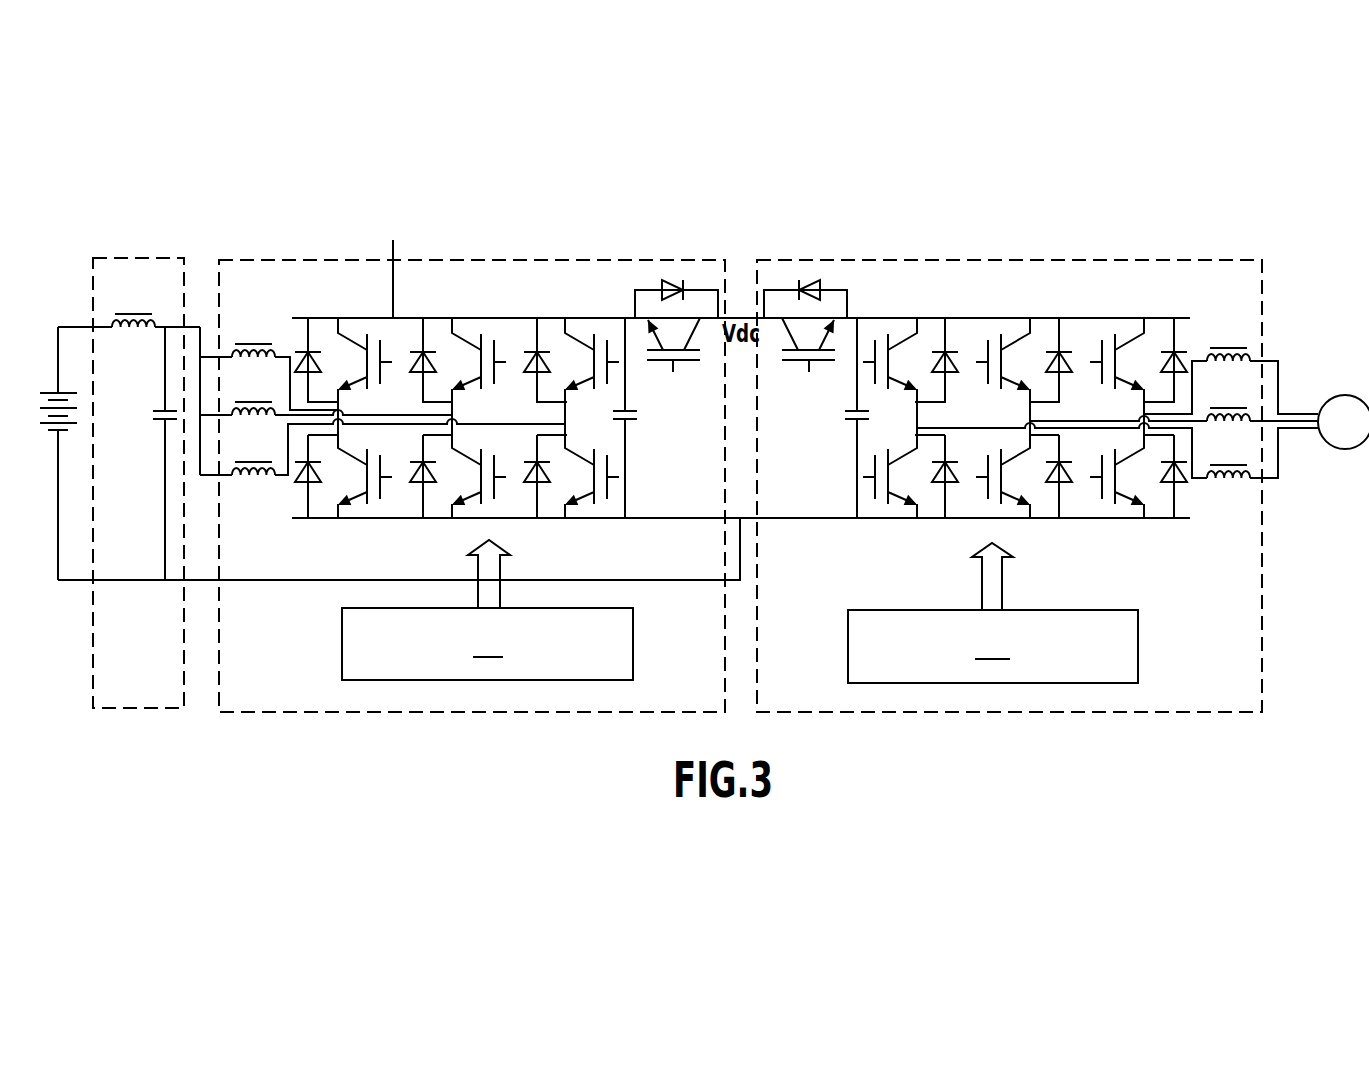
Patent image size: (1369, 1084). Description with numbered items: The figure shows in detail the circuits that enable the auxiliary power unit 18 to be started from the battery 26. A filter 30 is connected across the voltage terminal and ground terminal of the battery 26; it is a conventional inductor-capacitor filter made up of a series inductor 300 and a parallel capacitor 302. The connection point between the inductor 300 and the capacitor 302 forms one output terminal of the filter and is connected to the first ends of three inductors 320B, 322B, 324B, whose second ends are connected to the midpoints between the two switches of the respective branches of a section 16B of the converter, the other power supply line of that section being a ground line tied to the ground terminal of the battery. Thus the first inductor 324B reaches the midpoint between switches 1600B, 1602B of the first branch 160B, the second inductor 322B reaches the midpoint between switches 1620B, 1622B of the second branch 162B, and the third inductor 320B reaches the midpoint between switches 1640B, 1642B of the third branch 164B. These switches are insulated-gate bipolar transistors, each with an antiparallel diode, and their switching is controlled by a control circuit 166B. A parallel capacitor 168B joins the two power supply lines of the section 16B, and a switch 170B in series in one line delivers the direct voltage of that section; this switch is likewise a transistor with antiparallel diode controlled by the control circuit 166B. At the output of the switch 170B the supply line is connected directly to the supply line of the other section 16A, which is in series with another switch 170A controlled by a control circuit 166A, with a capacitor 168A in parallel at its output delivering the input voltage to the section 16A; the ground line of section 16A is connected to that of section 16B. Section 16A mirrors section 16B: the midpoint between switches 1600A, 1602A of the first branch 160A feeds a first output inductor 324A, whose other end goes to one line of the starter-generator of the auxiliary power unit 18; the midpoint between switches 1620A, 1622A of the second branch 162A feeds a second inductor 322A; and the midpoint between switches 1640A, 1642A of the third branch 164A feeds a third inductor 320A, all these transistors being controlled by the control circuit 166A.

The section of the DC/AC converter 16A is at (1158, 713).
The section of the DC/AC converter 16B is at (305, 712).
The APU 18 is at (1340, 395).
The battery 26 is at (50, 392).
The filter 30 is at (129, 258).
The series inductor 300 is at (132, 310).
The parallel capacitor 302 is at (158, 407).
The first branch 160A is at (937, 318).
The second branch 162A is at (1049, 318).
The third branch 164A is at (1162, 318).
The first branch 160B is at (546, 318).
The second branch 162B is at (433, 318).
The third branch 164B is at (321, 318).
The switch 1600A is at (900, 329).
The switch 1602A is at (903, 507).
The switch 1620A is at (1011, 329).
The switch 1622A is at (1015, 507).
The switch 1640A is at (1123, 329).
The switch 1642A is at (1130, 507).
The switch 1600B is at (585, 329).
The switch 1602B is at (580, 507).
The switch 1620B is at (473, 329).
The switch 1622B is at (467, 507).
The switch 1640B is at (357, 329).
The switch 1642B is at (352, 506).
The control circuit 166A is at (993, 613).
The control circuit 166B is at (487, 610).
The capacitor 168A is at (848, 423).
The parallel capacitor 168B is at (634, 423).
The switch 170A is at (793, 360).
The switch 170B is at (689, 360).
The third inductor 320A is at (1237, 347).
The second inductor 322A is at (1251, 397).
The first output inductor 324A is at (1252, 466).
The third inductor 320B is at (244, 340).
The second inductor 322B is at (255, 404).
The first inductor 324B is at (262, 452).